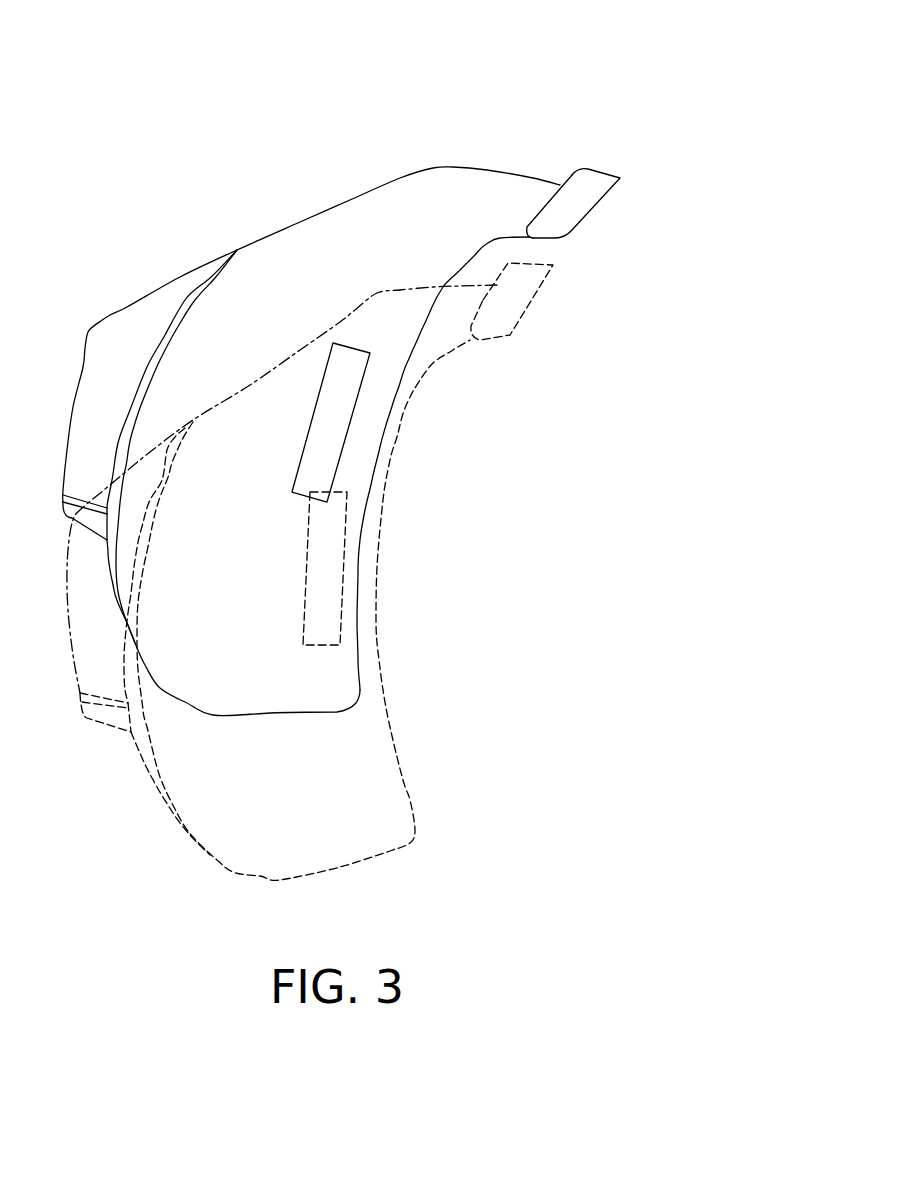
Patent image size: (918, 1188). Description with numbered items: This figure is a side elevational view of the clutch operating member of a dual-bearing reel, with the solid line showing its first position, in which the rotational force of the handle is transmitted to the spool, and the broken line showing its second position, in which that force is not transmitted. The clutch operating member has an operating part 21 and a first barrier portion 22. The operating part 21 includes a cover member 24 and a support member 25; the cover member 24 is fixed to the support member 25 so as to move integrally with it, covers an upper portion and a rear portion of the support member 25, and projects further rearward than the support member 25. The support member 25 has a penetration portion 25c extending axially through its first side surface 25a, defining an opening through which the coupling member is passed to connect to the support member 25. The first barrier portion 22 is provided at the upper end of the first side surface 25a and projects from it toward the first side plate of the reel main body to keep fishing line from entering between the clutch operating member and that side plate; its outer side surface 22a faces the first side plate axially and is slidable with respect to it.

The operating part 21 is at (230, 107).
The first barrier portion 22 is at (612, 168).
The outer side surface 22a is at (575, 203).
The cover member 24 is at (125, 337).
The support member 25 is at (262, 230).
The first side surface 25a is at (317, 287).
The penetration portion 25c is at (357, 352).